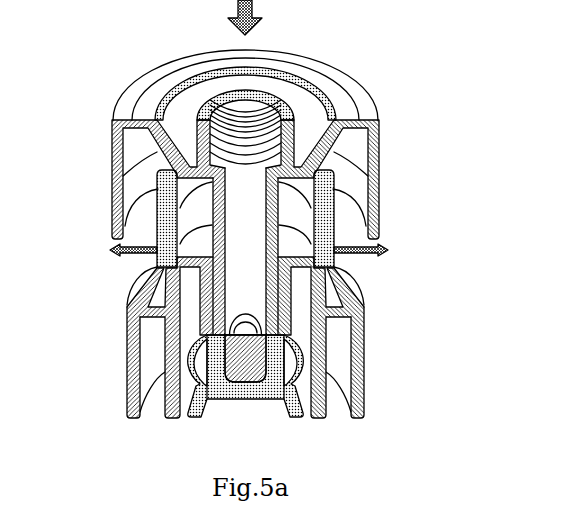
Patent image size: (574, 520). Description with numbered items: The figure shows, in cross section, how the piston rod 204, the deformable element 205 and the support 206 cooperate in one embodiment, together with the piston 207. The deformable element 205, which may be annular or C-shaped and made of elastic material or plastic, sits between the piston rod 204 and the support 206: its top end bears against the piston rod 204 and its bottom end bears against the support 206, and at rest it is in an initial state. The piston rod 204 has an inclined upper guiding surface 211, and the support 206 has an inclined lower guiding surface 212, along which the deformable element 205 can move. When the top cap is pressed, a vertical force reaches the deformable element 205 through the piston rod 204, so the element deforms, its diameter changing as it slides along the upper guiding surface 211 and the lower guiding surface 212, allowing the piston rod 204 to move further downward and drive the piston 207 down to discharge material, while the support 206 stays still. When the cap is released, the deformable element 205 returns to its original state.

The upper guiding surface 211 is at (112, 178).
The deformable element 205 is at (368, 207).
The piston rod 204 is at (278, 297).
The lower guiding surface 212 is at (127, 307).
The support 206 is at (127, 383).
The piston 207 is at (287, 389).